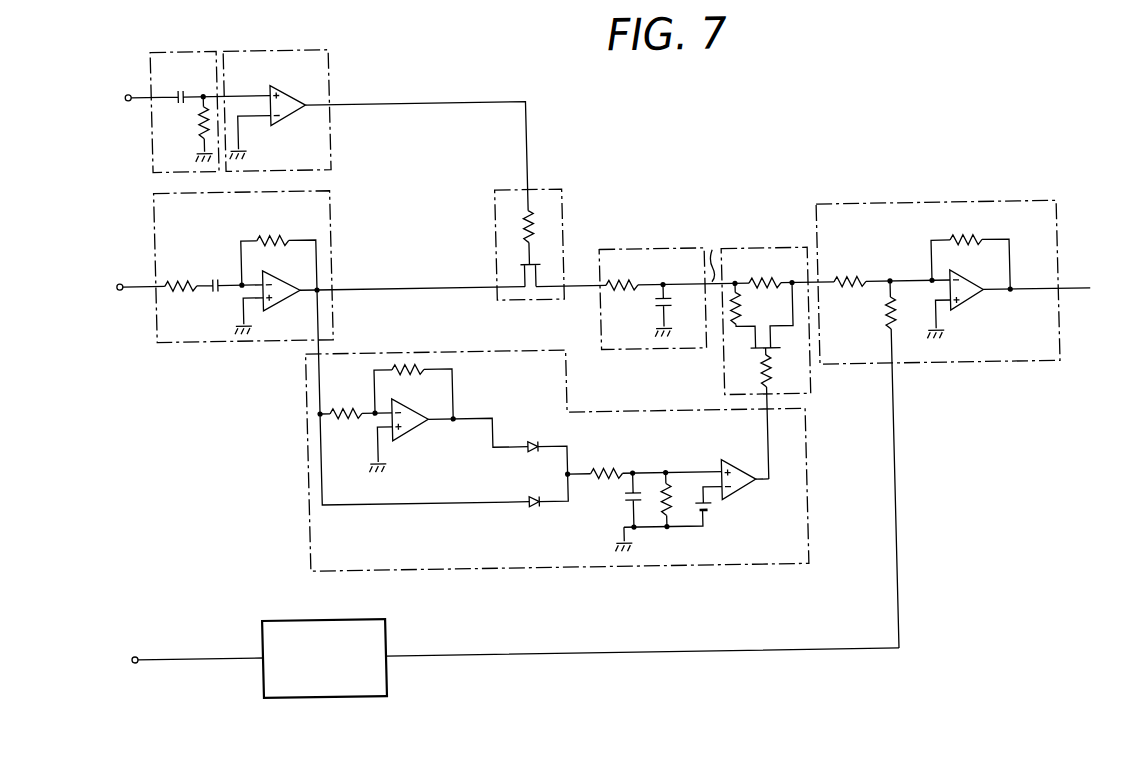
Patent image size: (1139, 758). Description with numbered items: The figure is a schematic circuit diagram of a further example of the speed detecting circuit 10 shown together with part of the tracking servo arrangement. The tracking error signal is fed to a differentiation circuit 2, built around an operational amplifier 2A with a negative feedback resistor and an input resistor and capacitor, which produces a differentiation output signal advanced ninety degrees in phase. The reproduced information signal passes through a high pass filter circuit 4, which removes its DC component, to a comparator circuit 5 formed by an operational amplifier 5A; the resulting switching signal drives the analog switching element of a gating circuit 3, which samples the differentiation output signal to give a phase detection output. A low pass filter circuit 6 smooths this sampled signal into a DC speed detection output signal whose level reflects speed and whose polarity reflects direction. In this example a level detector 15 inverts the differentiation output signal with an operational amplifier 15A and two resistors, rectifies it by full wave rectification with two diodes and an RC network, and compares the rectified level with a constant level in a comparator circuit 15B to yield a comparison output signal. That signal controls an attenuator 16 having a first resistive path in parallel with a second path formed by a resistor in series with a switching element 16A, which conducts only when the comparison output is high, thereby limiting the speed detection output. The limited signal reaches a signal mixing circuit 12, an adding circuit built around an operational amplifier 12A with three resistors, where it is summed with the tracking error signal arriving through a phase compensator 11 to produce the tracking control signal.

The speed detecting circuit 10 is at (660, 153).
The differentiation circuit 2 is at (230, 267).
The operational amplifier 2A is at (282, 302).
The gating circuit 3 is at (555, 192).
The high pass filter circuit 4 is at (169, 49).
The comparator circuit 5 is at (375, 114).
The operational amplifier 5A is at (287, 92).
The low pass filter circuit 6 is at (665, 252).
The phase compensator 11 is at (361, 698).
The signal mixing circuit 12 is at (975, 401).
The operational amplifier 12A is at (972, 305).
The level detector 15 is at (557, 452).
The operational amplifier 15A is at (413, 436).
The comparator circuit 15B is at (744, 499).
The attenuator 16 is at (767, 341).
The switching element 16A is at (769, 358).